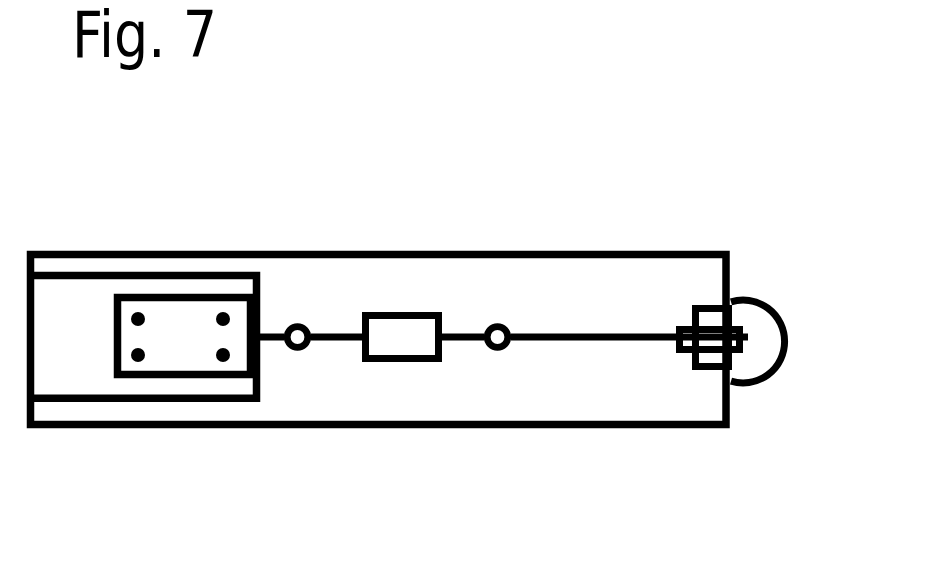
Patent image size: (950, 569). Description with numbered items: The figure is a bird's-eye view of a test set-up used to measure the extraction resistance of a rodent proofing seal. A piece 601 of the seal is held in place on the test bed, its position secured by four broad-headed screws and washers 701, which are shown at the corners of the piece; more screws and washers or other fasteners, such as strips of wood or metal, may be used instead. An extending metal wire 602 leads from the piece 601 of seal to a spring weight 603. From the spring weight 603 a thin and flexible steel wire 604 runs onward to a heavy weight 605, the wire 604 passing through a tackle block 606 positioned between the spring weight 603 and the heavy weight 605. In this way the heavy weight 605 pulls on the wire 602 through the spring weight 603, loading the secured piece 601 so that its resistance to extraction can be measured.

The piece of rodent proofing seal 601 is at (181, 294).
The extending metal wire 602 is at (273, 328).
The spring weight 603 is at (402, 316).
The thin and flexible steel wire 604 is at (582, 331).
The heavy weight 605 is at (743, 387).
The tackle block 606 is at (729, 305).
The broad-headed screws and washers 701 is at (223, 362).